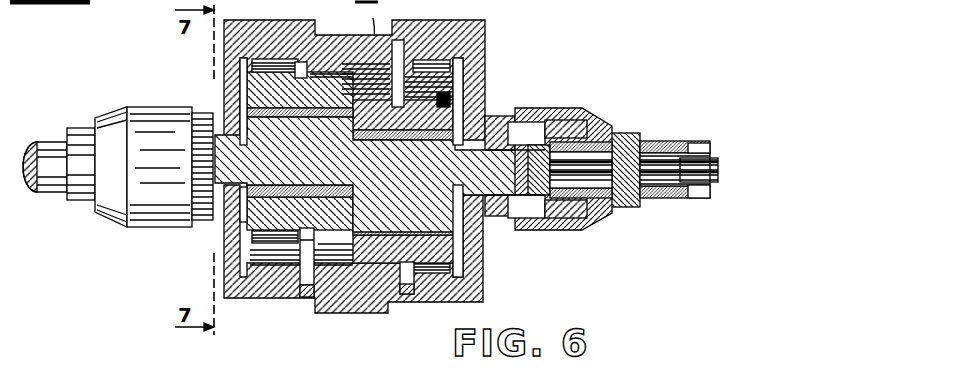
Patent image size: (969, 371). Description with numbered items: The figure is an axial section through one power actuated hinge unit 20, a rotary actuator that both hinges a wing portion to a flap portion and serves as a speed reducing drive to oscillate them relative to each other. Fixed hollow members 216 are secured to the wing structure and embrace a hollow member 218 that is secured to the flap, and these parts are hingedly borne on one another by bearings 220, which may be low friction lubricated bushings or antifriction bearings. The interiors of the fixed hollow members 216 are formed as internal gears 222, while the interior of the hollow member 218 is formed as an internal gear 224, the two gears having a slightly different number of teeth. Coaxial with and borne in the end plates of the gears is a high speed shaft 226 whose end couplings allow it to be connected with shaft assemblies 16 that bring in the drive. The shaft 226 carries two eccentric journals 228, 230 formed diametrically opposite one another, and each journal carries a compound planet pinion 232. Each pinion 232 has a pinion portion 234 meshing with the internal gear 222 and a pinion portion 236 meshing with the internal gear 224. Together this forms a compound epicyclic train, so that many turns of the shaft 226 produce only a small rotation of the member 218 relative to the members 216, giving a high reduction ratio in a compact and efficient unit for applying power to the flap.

The shaft assemblies 16 is at (38, 200).
The unit 20 is at (493, 68).
The fixed hollow members 216 is at (230, 40).
The hollow member 218 is at (373, 313).
The bearings 220 is at (303, 290).
The internal gears 222 is at (268, 80).
The internal gear 224 is at (328, 272).
The high speed shaft 226 is at (502, 173).
The eccentric journal 228 is at (275, 125).
The eccentric journal 230 is at (432, 222).
The compound planet pinion 232 is at (243, 75).
The pinion portion 234 is at (243, 242).
The pinion portion 236 is at (325, 75).